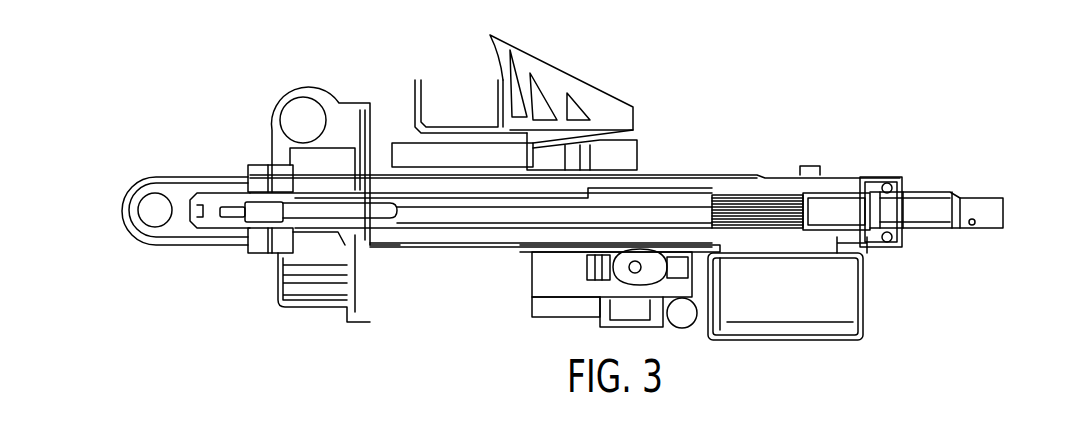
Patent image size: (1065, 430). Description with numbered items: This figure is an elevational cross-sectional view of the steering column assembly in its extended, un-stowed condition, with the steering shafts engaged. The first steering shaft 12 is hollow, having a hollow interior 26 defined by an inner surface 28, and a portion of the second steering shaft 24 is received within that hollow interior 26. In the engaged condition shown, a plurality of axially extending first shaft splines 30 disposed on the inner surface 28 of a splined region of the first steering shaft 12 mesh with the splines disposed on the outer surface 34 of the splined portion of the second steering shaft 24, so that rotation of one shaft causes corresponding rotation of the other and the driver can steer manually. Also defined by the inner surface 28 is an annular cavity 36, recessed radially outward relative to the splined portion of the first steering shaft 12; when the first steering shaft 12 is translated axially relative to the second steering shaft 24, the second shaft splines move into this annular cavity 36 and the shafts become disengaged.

The first steering shaft 12 is at (985, 198).
The second steering shaft 24 is at (458, 213).
The hollow interior 26 is at (980, 212).
The inner surface 28 is at (972, 224).
The first shaft splines 30 is at (765, 210).
The outer surface 34 is at (510, 222).
The annular cavity 36 is at (857, 210).